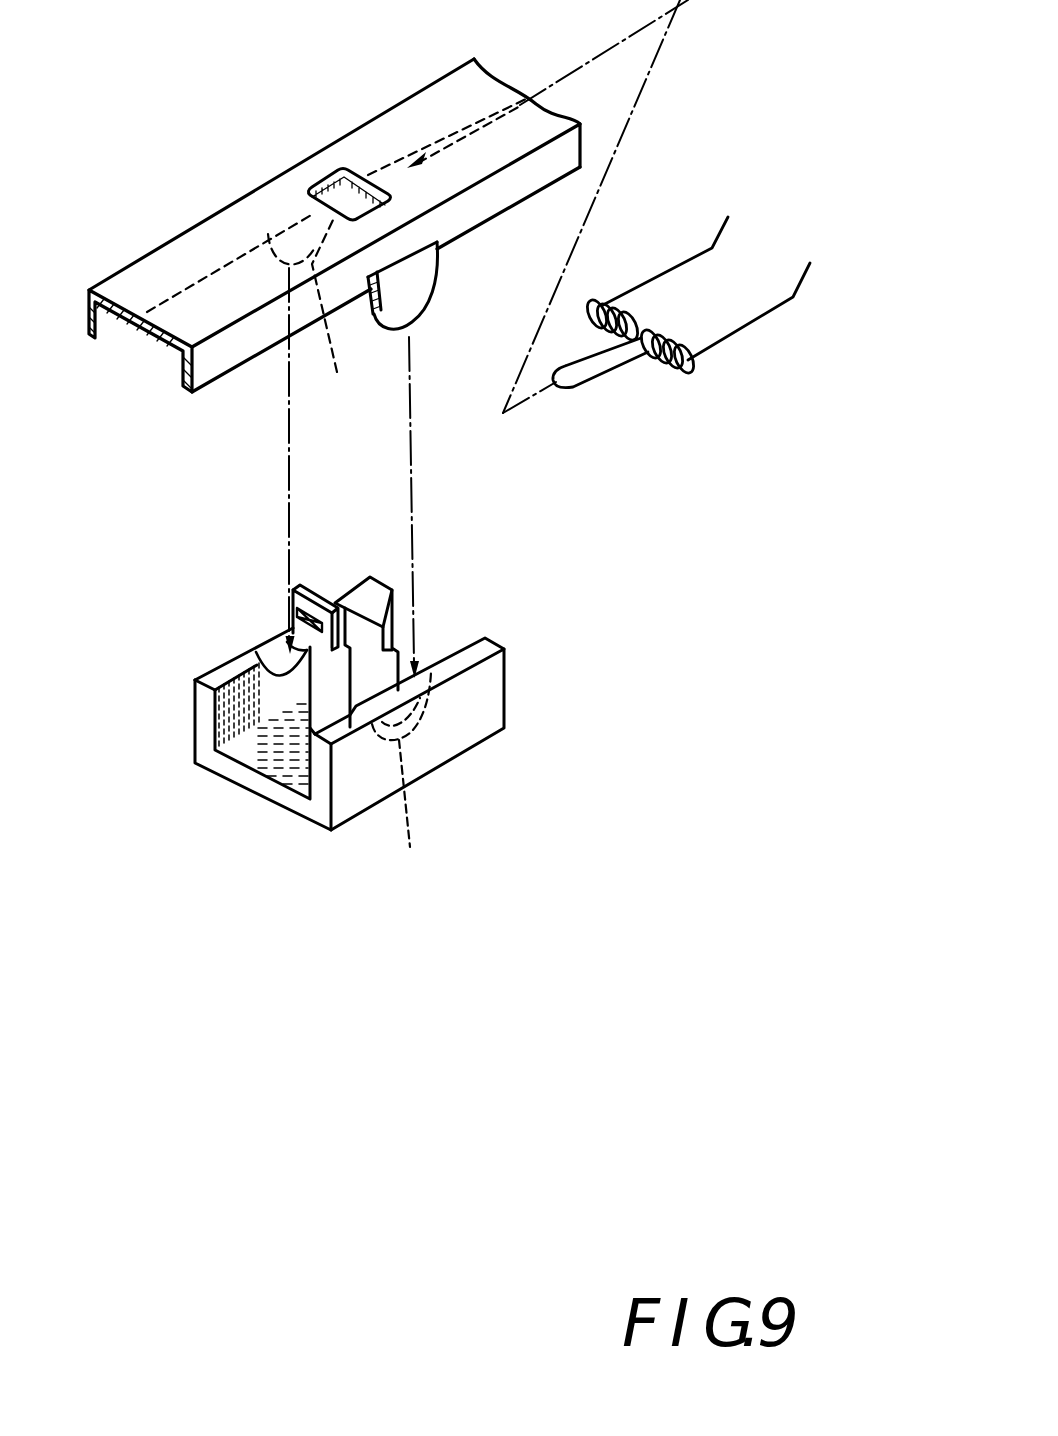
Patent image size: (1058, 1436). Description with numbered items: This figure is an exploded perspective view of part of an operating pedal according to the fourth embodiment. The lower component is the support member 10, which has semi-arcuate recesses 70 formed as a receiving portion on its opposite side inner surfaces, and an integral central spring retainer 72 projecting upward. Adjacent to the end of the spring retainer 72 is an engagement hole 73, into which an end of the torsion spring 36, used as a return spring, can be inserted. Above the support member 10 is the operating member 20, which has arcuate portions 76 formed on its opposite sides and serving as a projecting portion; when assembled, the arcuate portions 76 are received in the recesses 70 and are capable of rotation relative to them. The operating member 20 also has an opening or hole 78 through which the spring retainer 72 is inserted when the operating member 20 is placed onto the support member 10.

The support member 10 is at (467, 733).
The operating member 20 is at (187, 250).
The torsion spring 36 is at (652, 340).
The semi-arcuate recesses 70 is at (290, 674).
The spring retainer 72 is at (313, 592).
The engagement hole 73 is at (290, 632).
The arcuate portions 76 is at (418, 301).
The hole 78 is at (361, 204).